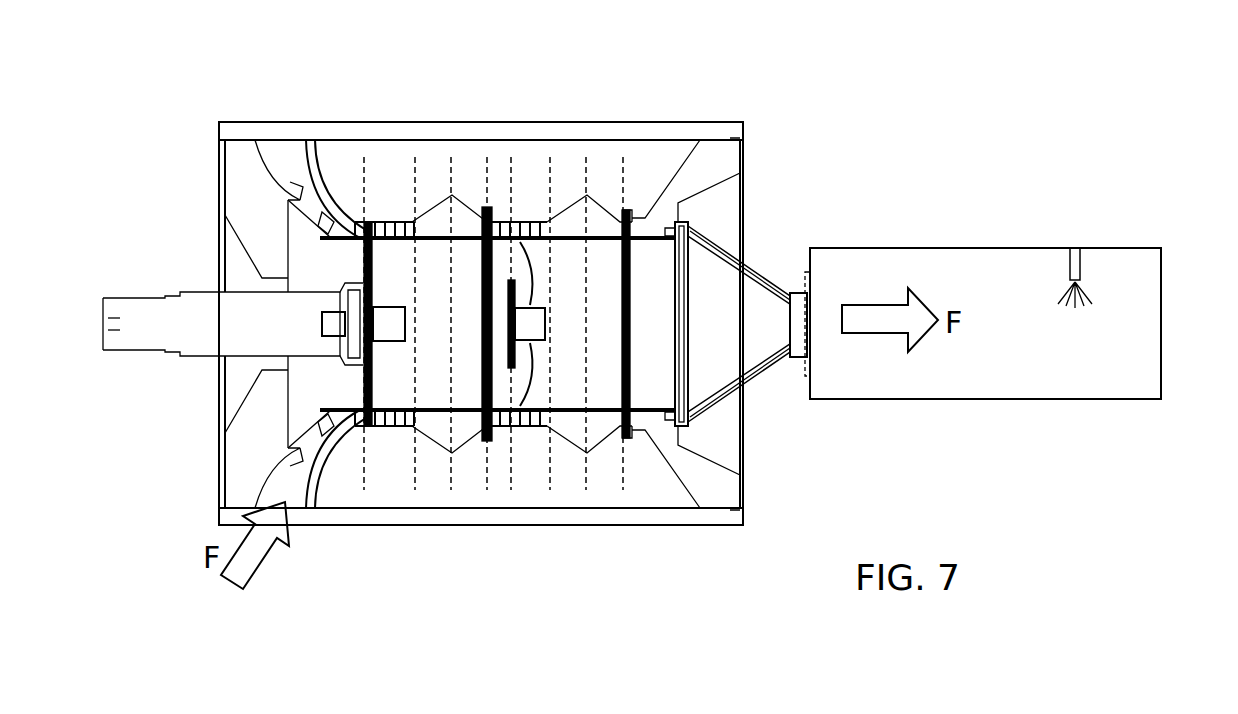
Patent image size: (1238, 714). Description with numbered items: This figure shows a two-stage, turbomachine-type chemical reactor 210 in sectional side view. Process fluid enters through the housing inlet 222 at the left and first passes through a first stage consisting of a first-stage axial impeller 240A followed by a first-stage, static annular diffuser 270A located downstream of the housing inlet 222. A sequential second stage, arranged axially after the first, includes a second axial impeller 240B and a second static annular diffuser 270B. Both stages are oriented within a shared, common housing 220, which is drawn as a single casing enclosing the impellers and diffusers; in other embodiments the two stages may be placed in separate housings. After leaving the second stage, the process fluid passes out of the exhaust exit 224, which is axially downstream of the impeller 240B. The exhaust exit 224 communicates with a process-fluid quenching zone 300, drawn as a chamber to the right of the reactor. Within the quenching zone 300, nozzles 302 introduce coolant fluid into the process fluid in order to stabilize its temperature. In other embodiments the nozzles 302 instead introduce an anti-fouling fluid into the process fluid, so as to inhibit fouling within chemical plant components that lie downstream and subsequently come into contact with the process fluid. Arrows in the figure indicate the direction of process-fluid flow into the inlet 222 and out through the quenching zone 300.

The two-stage, turbomachine-type chemical reactor 210 is at (140, 170).
The common housing 220 is at (545, 121).
The housing inlet 222 is at (286, 153).
The exhaust exit 224 is at (817, 306).
The first-stage axial impeller 240A is at (391, 423).
The first-stage static annular diffuser 270A is at (435, 418).
The second-stage axial impeller 240B is at (521, 440).
The second-stage static annular diffuser 270B is at (591, 419).
The process-fluid quenching zone 300 is at (1085, 259).
The nozzles 302 is at (1082, 270).